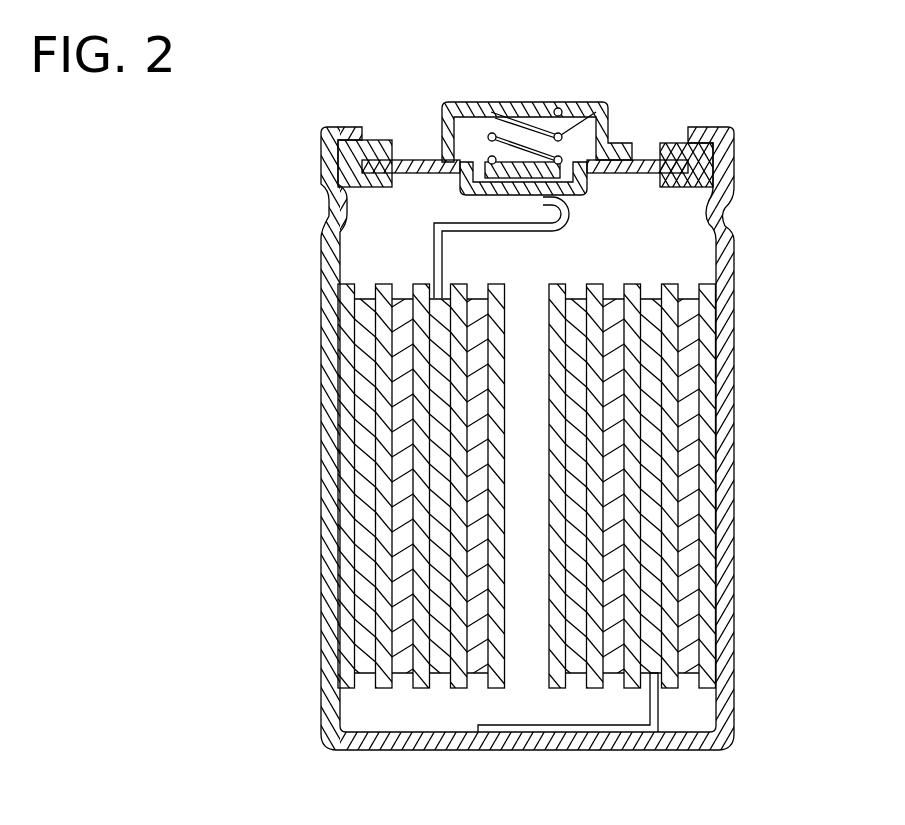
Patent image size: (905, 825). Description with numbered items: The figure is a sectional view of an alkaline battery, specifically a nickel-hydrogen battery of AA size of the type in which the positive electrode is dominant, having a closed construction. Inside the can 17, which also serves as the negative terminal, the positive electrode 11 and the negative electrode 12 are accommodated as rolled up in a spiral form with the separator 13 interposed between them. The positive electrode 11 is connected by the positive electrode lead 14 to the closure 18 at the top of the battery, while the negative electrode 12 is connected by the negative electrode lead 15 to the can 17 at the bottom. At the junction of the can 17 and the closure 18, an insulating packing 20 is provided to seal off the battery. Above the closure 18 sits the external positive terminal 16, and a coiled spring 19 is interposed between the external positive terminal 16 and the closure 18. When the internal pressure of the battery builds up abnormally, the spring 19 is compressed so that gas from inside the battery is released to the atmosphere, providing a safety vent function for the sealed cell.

The positive electrode 11 is at (688, 418).
The negative electrode 12 is at (657, 530).
The separator 13 is at (670, 356).
The positive electrode lead 14 is at (440, 222).
The negative electrode lead 15 is at (658, 718).
The external positive terminal 16 is at (527, 101).
The can 17 is at (737, 668).
The closure 18 is at (641, 158).
The coiled spring 19 is at (562, 110).
The insulating packing 20 is at (673, 142).